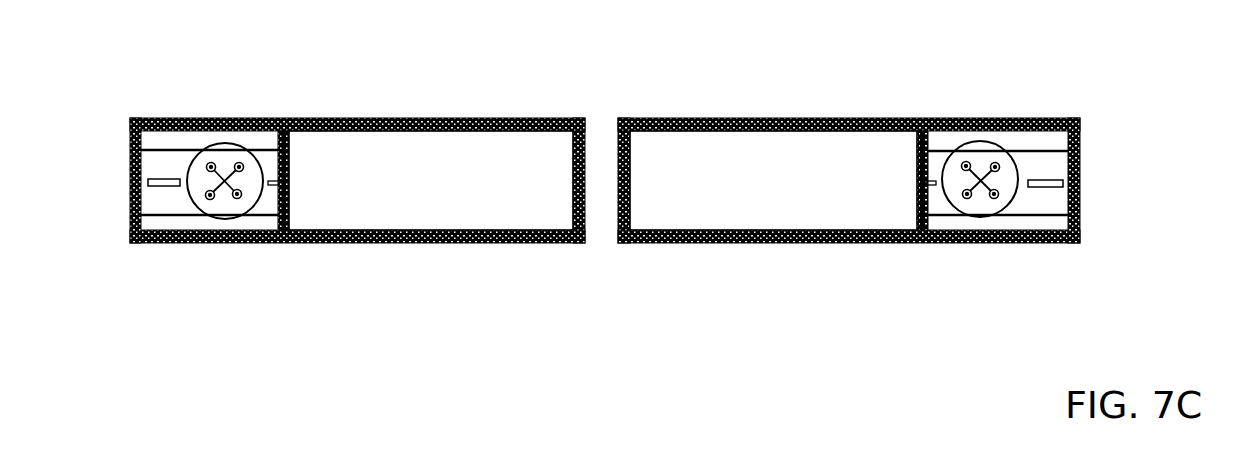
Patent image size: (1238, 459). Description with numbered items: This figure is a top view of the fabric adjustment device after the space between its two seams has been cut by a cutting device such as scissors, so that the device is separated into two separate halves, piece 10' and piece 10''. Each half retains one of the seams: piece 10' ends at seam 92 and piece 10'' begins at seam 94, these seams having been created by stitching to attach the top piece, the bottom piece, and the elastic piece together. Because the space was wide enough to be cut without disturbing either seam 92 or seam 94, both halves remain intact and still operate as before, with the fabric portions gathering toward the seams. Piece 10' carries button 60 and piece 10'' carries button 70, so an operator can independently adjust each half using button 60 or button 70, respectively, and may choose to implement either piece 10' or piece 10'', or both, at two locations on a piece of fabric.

The piece 10' is at (362, 163).
The piece 10'' is at (856, 168).
The button 60 is at (222, 205).
The button 70 is at (978, 205).
The seam 92 is at (592, 212).
The seam 94 is at (613, 150).